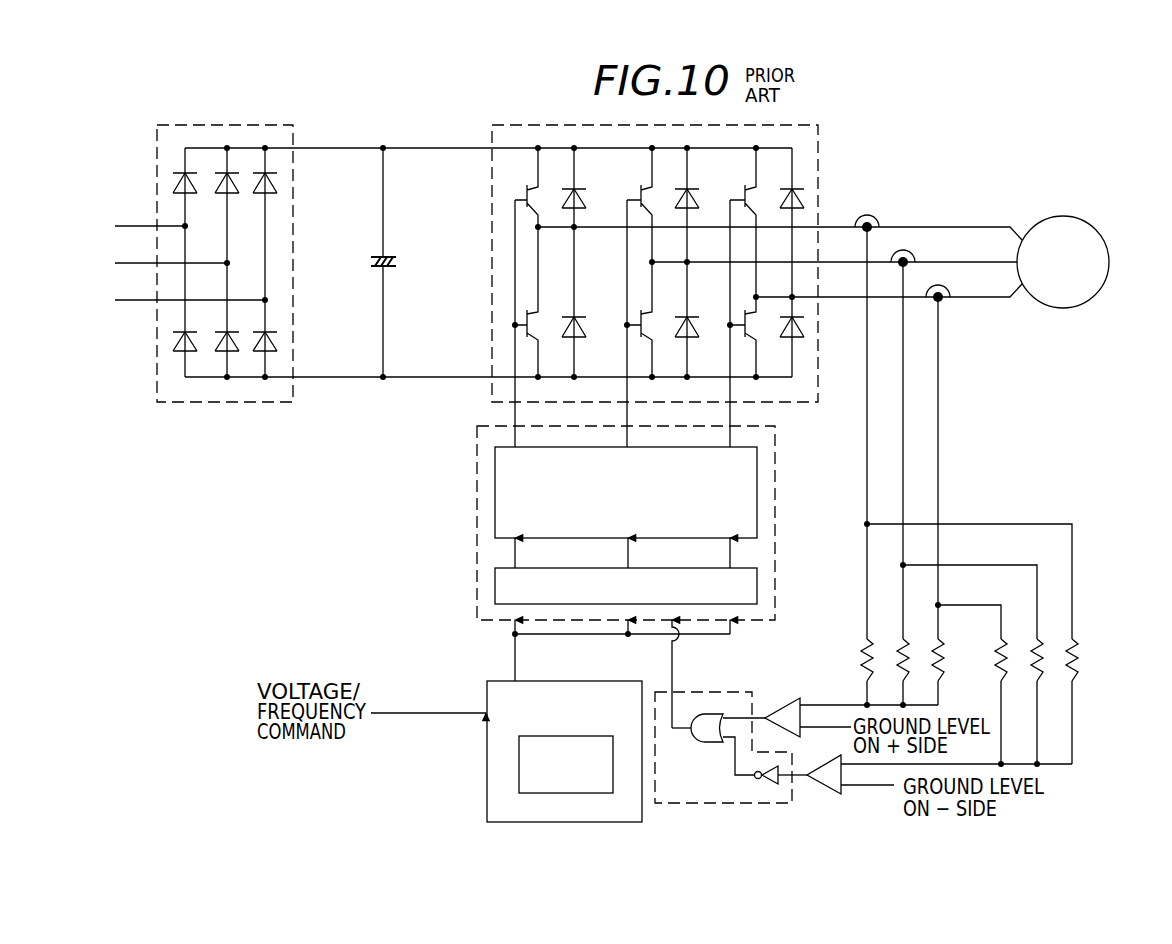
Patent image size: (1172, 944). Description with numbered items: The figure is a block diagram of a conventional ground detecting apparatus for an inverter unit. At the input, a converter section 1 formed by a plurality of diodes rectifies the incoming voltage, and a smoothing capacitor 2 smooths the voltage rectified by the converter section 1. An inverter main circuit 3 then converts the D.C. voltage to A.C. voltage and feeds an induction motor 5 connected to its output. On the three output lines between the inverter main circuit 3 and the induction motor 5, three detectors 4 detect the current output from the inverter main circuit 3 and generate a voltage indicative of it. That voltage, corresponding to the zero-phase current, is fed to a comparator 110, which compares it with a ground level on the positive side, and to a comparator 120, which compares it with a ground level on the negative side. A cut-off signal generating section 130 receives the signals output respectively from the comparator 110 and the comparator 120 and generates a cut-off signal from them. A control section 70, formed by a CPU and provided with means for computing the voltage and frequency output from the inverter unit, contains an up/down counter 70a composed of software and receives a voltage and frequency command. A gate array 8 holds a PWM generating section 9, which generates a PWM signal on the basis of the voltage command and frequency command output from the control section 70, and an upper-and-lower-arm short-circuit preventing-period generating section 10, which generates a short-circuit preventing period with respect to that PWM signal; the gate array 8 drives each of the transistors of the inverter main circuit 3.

The converter section 1 is at (299, 125).
The smoothing capacitor 2 is at (371, 262).
The inverter main circuit 3 is at (818, 125).
The detector 4 is at (869, 215).
The induction motor 5 is at (1063, 216).
The gate array 8 is at (603, 523).
The PWM generating section 9 is at (494, 582).
The upper-and-lower-arm short-circuit preventing-period generating section 10 is at (494, 489).
The control section 70 is at (489, 769).
The up/down counter 70a is at (556, 793).
The comparator 110 is at (767, 703).
The comparator 120 is at (830, 788).
The cut-off signal generating section 130 is at (710, 692).